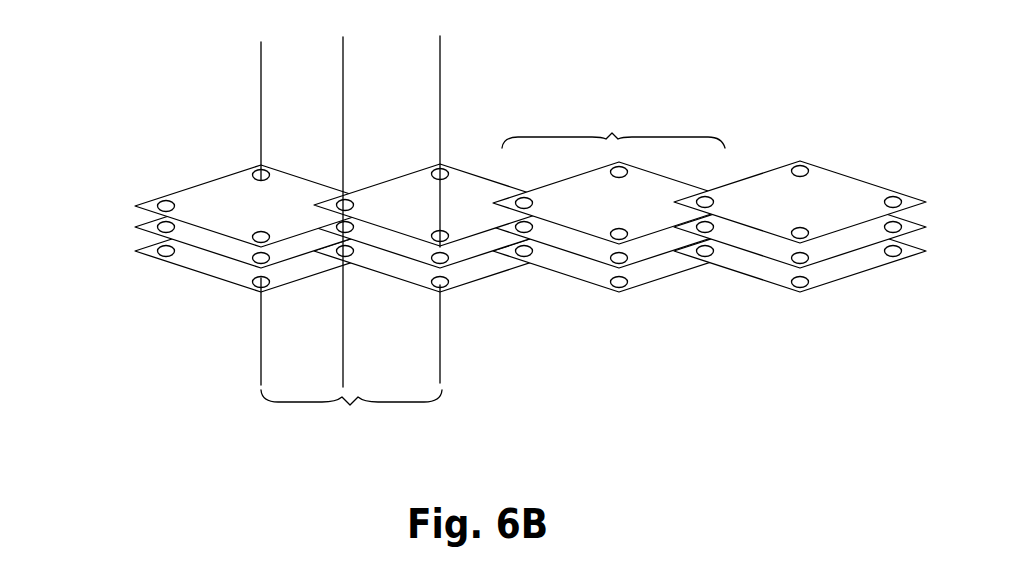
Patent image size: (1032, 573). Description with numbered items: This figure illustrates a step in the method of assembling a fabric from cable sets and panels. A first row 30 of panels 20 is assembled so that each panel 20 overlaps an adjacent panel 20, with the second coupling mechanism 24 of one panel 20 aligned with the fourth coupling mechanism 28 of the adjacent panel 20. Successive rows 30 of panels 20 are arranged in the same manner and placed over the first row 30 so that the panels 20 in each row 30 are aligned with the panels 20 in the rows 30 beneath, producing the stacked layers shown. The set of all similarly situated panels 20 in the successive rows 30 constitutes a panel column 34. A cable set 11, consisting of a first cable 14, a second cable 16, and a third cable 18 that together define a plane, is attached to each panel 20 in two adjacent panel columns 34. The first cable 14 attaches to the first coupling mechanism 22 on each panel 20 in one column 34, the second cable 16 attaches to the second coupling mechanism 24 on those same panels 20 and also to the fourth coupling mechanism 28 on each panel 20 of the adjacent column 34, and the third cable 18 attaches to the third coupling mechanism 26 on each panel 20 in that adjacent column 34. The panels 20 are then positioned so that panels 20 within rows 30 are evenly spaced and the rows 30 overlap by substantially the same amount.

The cable set 11 is at (350, 405).
The first cable 14 is at (260, 69).
The second cable 16 is at (345, 66).
The third cable 18 is at (442, 60).
The panel 20 is at (246, 224).
The first coupling mechanism 22 is at (253, 175).
The second coupling mechanism 24 is at (884, 199).
The third coupling mechanism 26 is at (432, 234).
The fourth coupling mechanism 28 is at (714, 202).
The row 30 is at (135, 253).
The panel column 34 is at (613, 132).